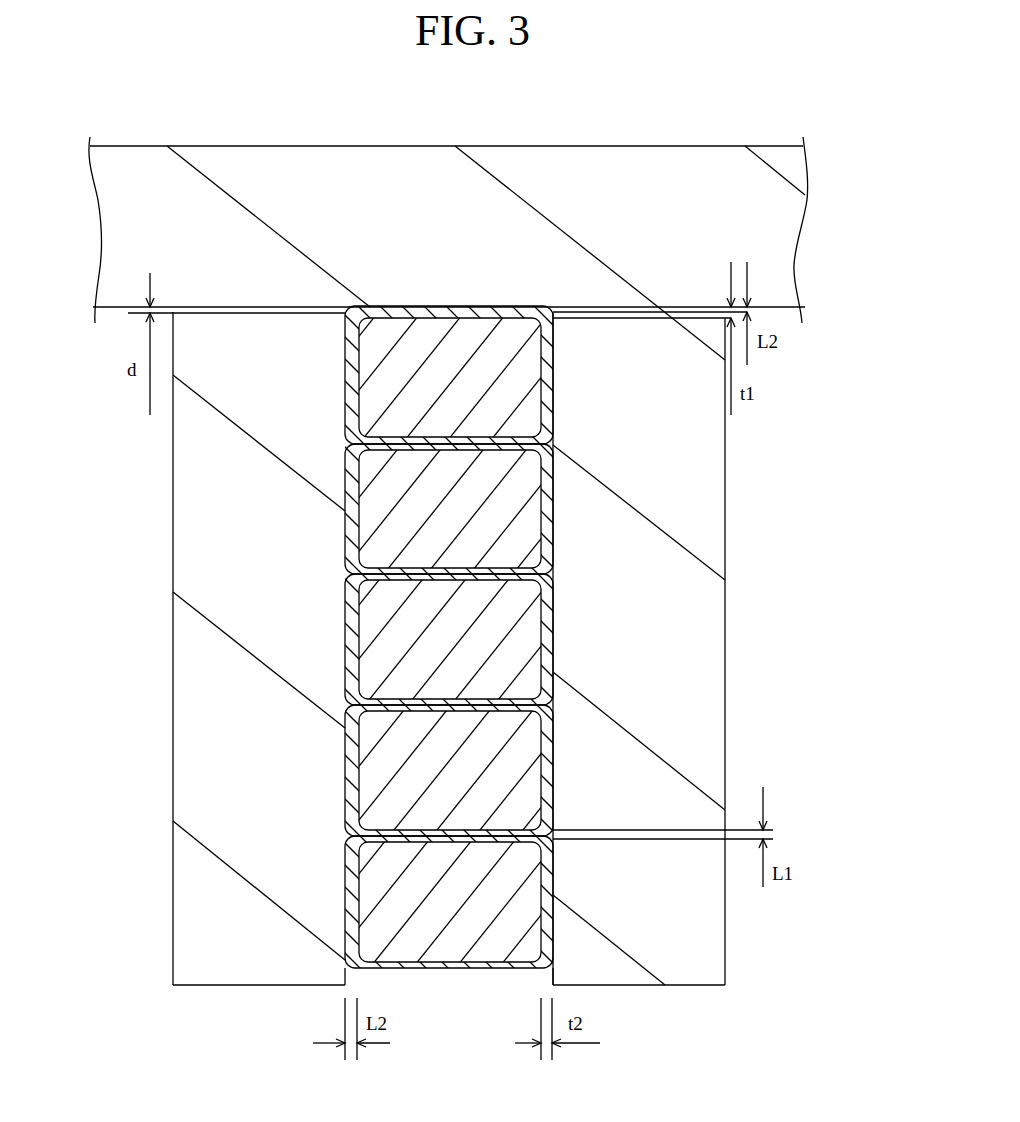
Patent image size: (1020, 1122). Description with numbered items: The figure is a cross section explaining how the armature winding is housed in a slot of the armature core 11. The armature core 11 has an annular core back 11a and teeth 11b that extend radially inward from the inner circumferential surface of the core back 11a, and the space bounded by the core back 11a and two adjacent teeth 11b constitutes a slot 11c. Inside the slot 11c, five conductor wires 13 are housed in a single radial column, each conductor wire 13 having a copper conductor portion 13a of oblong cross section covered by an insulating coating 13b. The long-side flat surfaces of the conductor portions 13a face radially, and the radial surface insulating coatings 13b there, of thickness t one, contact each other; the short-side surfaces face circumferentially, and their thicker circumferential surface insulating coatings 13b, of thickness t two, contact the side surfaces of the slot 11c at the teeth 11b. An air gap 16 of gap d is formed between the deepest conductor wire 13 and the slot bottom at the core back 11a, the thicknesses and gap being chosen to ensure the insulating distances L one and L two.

The armature core 11 is at (479, 539).
The core back 11a is at (783, 238).
The teeth 11b is at (714, 457).
The slots 11c is at (553, 628).
The conductor wire 13 is at (510, 637).
The conductor portion 13a is at (545, 512).
The insulating coating 13b is at (548, 553).
The air gaps 16 is at (414, 310).